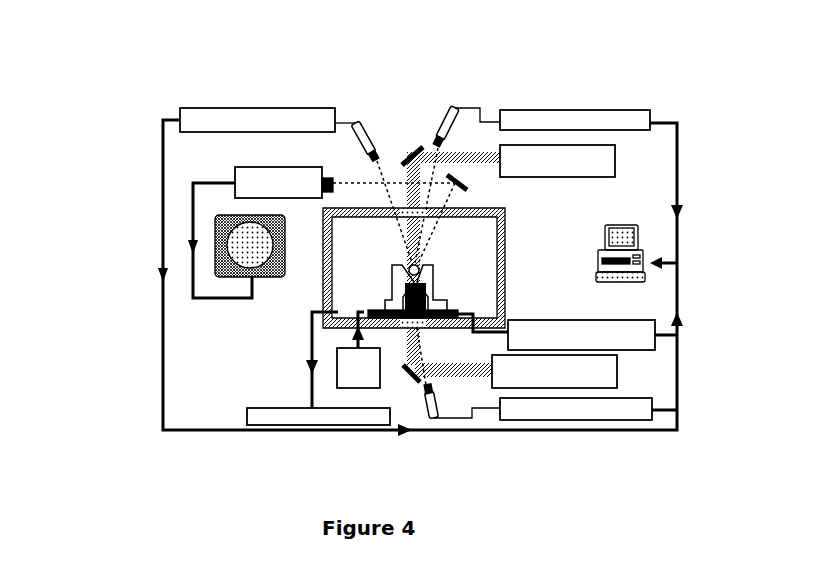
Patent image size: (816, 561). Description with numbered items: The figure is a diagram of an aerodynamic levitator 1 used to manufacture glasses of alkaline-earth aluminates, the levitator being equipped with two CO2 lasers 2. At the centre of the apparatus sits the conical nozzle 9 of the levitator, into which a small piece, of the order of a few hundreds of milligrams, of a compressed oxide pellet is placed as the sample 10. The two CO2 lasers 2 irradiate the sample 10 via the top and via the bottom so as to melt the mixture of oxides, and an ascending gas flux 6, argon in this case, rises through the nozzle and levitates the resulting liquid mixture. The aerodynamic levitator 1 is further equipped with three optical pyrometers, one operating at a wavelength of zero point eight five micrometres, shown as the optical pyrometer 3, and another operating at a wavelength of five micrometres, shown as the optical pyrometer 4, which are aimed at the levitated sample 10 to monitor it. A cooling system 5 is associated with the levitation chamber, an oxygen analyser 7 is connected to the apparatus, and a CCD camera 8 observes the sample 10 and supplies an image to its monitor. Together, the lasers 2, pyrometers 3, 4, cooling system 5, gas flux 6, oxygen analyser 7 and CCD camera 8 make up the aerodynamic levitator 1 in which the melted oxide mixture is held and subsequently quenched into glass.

The aerodynamic levitator 1 is at (137, 108).
The CO2 laser 2 is at (509, 266).
The optical pyrometer 3 is at (555, 264).
The optical pyrometer 4 is at (267, 120).
The cooling system 5 is at (567, 332).
The ascending gas flux 6 is at (358, 350).
The oxygen analyser 7 is at (292, 417).
The CCD camera 8 is at (321, 232).
The conical nozzle 9 is at (435, 282).
The sample 10 is at (425, 258).